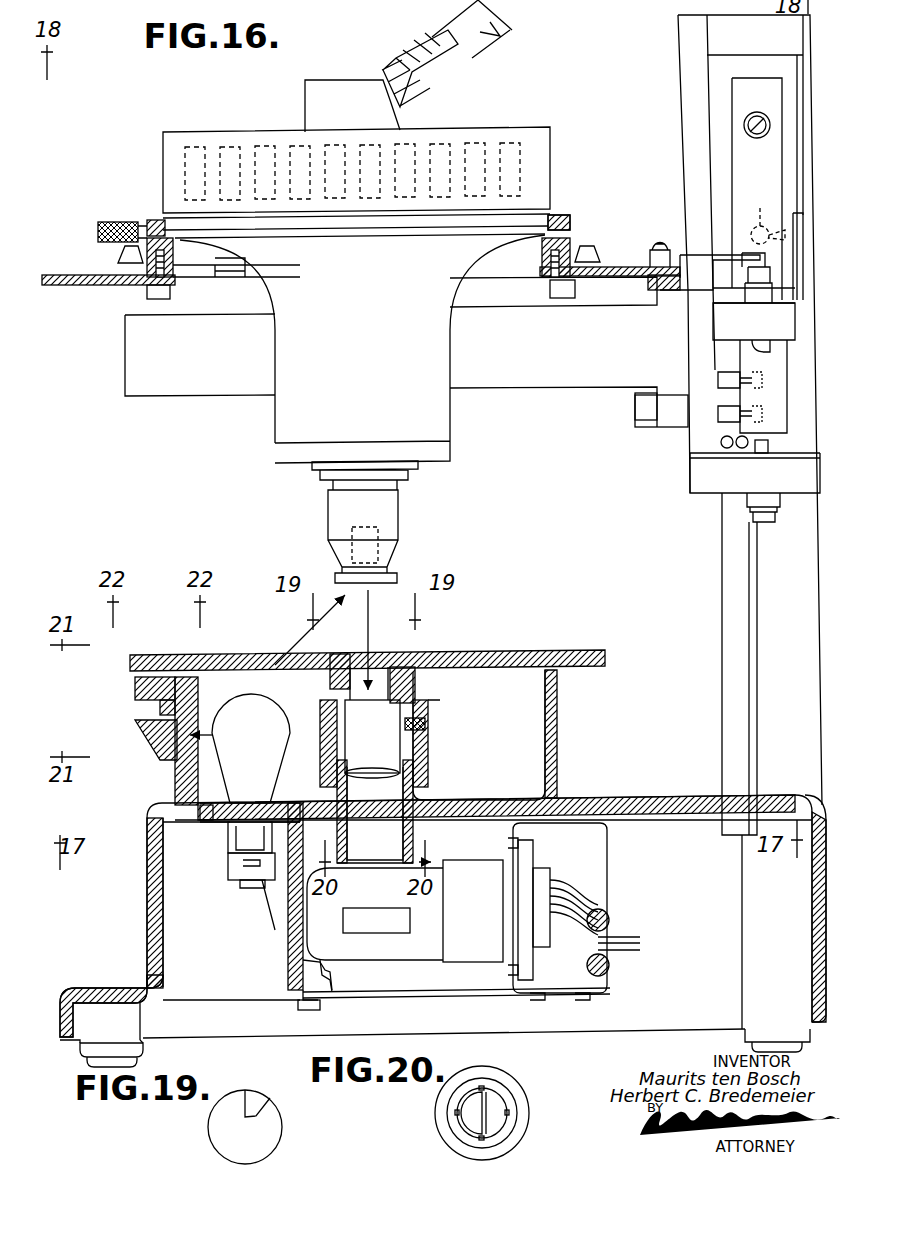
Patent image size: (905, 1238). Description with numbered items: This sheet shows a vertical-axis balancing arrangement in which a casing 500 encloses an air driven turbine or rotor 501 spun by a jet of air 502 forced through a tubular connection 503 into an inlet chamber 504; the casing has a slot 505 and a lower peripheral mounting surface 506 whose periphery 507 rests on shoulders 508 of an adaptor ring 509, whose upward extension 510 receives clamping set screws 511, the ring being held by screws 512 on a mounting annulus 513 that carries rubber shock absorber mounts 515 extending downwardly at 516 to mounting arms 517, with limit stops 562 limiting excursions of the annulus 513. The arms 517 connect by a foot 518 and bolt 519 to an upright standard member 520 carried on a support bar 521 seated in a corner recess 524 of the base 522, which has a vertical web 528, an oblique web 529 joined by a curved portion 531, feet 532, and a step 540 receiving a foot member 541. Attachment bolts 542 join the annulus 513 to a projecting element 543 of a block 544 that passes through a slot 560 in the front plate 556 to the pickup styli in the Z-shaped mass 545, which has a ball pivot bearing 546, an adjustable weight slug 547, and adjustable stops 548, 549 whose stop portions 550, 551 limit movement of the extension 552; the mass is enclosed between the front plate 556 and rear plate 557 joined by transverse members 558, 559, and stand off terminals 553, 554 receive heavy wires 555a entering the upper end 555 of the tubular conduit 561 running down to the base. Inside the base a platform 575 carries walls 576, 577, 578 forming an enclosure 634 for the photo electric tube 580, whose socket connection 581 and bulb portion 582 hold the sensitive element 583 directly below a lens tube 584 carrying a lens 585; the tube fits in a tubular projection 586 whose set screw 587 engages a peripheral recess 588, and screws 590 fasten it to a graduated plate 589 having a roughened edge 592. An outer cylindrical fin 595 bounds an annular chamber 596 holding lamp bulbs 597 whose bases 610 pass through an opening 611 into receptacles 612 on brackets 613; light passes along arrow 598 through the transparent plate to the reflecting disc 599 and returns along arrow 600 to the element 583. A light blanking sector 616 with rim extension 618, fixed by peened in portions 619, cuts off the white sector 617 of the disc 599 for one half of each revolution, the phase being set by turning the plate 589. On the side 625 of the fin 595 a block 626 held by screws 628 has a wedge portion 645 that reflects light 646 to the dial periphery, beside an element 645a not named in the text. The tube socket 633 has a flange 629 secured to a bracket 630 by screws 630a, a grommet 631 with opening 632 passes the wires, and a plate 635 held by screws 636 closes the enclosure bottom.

In FIG. 16, the casing 500 is at (163, 137).
In FIG. 16, the air driven turbine 501 is at (497, 158).
In FIG. 16, the jet of air 502 is at (498, 32).
In FIG. 16, the tubular connection 503 is at (470, 60).
In FIG. 16, the inlet chamber 504 is at (343, 90).
In FIG. 16, the slot 505 is at (412, 222).
In FIG. 16, the lower continuous peripheral mounting surface 506 is at (268, 248).
In FIG. 16, the periphery 507 is at (500, 232).
In FIG. 16, the shoulders 508 is at (540, 280).
In FIG. 16, the adaptor ring 509 is at (232, 254).
In FIG. 16, the upward extension 510 is at (152, 222).
In FIG. 16, the clamping set screws 511 is at (100, 224).
In FIG. 16, the screws 512 is at (212, 280).
In FIG. 16, the mounting ring or annulus 513 is at (75, 287).
In FIG. 16, the rubber cup or shock absorber mounts 515 is at (118, 255).
In FIG. 16, the downward extension of mounts 516 is at (147, 297).
In FIG. 16, the mounting structure or arms 517 is at (187, 396).
In FIG. 16, the foot 518 is at (655, 428).
In FIG. 16, the bolt 519 is at (635, 410).
In FIG. 16, the upright standard member 520 is at (680, 16).
In FIG. 16, the upright support bar 521 is at (749, 622).
In FIG. 16, the base support 522 is at (160, 804).
In FIG. 16, the corner recess 524 is at (742, 970).
In FIG. 16, the vertical web 528 is at (812, 910).
In FIG. 16, the side oblique web 529 is at (260, 1038).
In FIG. 16, the curved portion 531 is at (148, 860).
In FIG. 16, the feet 532 is at (745, 1040).
In FIG. 16, the forwardly extending step 540 is at (83, 988).
In FIG. 16, the foot member 541 is at (143, 1055).
In FIG. 16, the attachment bolts 542 is at (648, 250).
In FIG. 16, the projecting element 543 is at (663, 292).
In FIG. 16, the block 544 is at (700, 275).
In FIG. 16, the Z-shaped mass 545 is at (745, 159).
In FIG. 16, the ball pivot bearing 546 is at (760, 212).
In FIG. 16, the adjustable weight slug 547 is at (745, 118).
In FIG. 16, the adjustable stop 548 is at (757, 316).
In FIG. 16, the adjustable stop 549 is at (750, 518).
In FIG. 16, the projecting stop portion 550 is at (752, 345).
In FIG. 16, the projecting stop portion 551 is at (755, 450).
In FIG. 16, the extension 552 is at (755, 473).
In FIG. 16, the stand off terminal 553 is at (718, 378).
In FIG. 16, the stand off terminal 554 is at (640, 415).
In FIG. 16, the upper end 555 is at (727, 448).
In FIG. 16, the heavy wires 555a is at (797, 450).
In FIG. 16, the front plate 556 is at (690, 127).
In FIG. 16, the rear plate 557 is at (803, 42).
In FIG. 16, the transverse member 558 is at (718, 40).
In FIG. 16, the transverse member 559 is at (747, 500).
In FIG. 16, the slot 560 is at (690, 340).
In FIG. 16, the tubular member 561 is at (722, 582).
In FIG. 16, the limit stops 562 is at (278, 300).
In FIG. 16, the platform 575 is at (620, 797).
In FIG. 16, the wall structure 576 is at (620, 845).
In FIG. 16, the wall structure 577 is at (290, 950).
In FIG. 16, the wall structure 578 is at (455, 985).
In FIG. 16, the photo electric tube 580 is at (462, 958).
In FIG. 16, the socket connection 581 is at (472, 870).
In FIG. 16, the bulb portion 582 is at (360, 964).
In FIG. 16, the photo electric sensitive element 583 is at (410, 915).
In FIG. 16, the tubular member 584 is at (413, 776).
In FIG. 16, the lens 585 is at (400, 770).
In FIG. 16, the tubular projection 586 is at (322, 705).
In FIG. 16, the set screw 587 is at (428, 722).
In FIG. 16, the peripheral recess 588 is at (405, 722).
In FIG. 16, the graduated plate 589 is at (395, 652).
In FIG. 16, the screws 590 is at (340, 654).
In FIG. 16, the serrated or roughened edge 592 is at (580, 652).
In FIG. 16, the outer cylindrical fin element 595 is at (560, 724).
In FIG. 16, the annular chamber 596 is at (520, 763).
In FIG. 16, the lamp bulbs 597 is at (230, 803).
In FIG. 16, the arrow 598 is at (300, 640).
In FIG. 16, the light reflecting disc 599 is at (398, 565).
In FIG. 19, the light reflecting disc 599 is at (275, 1148).
In FIG. 16, the arrow 600 is at (370, 625).
In FIG. 16, the base portions 610 is at (247, 803).
In FIG. 16, the opening 611 is at (295, 803).
In FIG. 16, the base receptacles 612 is at (230, 860).
In FIG. 16, the bracket 613 is at (230, 898).
In FIG. 16, the light blanking sector 616 is at (385, 863).
In FIG. 20, the light blanking sector 616 is at (497, 1105).
In FIG. 19, the white sector 617 is at (265, 1108).
In FIG. 20, the rim extension 618 is at (458, 1108).
In FIG. 20, the peened in portions 619 is at (510, 1113).
In FIG. 16, the side 625 is at (175, 780).
In FIG. 16, the block 626 is at (135, 685).
In FIG. 16, the screws 628 is at (242, 718).
In FIG. 16, the flange 629 is at (550, 895).
In FIG. 16, the bracket 630 is at (560, 908).
In FIG. 16, the screws 630a is at (508, 842).
In FIG. 16, the grommet 631 is at (612, 920).
In FIG. 16, the opening 632 is at (612, 967).
In FIG. 16, the tube socket 633 is at (548, 945).
In FIG. 16, the enclosure 634 is at (318, 970).
In FIG. 16, the plate 635 is at (505, 998).
In FIG. 16, the screws 636 is at (298, 1005).
In FIG. 16, the lower oblique portion or wedge portion 645 is at (137, 732).
In FIG. 16, the reflector pointer 645a is at (230, 747).
In FIG. 16, the reflected light 646 is at (175, 745).